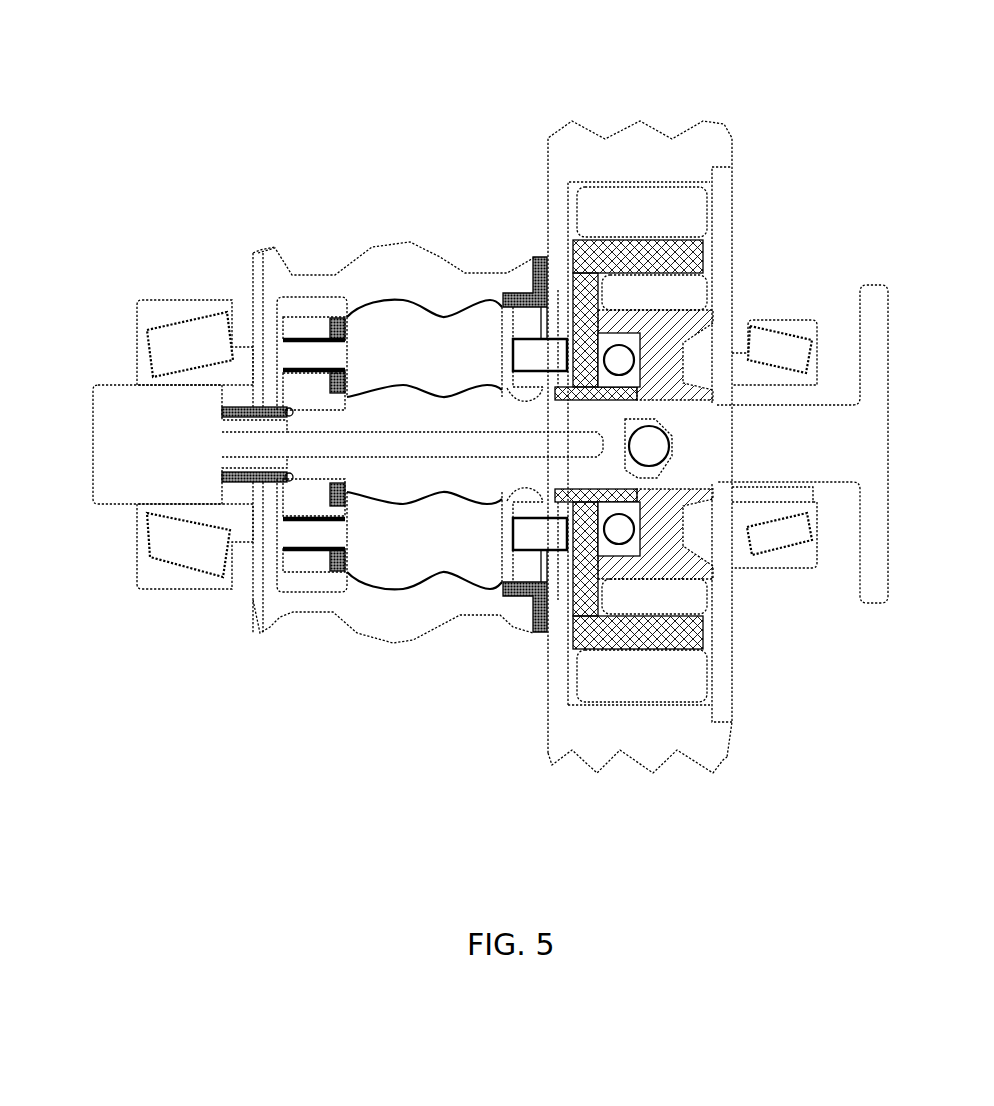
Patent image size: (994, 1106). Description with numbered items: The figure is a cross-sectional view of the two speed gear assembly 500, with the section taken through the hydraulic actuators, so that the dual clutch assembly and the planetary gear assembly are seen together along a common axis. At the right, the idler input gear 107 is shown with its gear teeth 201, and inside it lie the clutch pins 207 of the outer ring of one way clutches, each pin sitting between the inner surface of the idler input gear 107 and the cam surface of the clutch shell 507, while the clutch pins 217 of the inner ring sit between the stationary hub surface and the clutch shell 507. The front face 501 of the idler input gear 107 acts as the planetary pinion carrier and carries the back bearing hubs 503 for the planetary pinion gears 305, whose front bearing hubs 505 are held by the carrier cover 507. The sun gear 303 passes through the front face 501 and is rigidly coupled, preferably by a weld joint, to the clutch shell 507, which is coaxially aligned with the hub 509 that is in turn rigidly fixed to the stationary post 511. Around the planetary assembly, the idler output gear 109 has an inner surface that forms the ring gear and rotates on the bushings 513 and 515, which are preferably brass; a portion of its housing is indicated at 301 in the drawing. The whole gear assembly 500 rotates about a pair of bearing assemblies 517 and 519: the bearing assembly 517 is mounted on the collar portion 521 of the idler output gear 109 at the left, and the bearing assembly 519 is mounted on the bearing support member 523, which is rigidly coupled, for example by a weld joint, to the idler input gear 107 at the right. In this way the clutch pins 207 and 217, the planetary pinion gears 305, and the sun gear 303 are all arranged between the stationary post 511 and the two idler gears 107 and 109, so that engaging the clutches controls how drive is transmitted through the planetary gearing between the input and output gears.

The gear assembly 500 is at (287, 83).
The idler input gear 107 is at (626, 143).
The gear teeth 201 is at (683, 122).
The front face 501 is at (536, 203).
The back bearing hubs 503 is at (546, 258).
The front bearing hubs 505 is at (308, 340).
The clutch shell 507 is at (697, 256).
The hub 509 is at (678, 563).
The stationary post 511 is at (820, 459).
The bushing 513 is at (533, 627).
The bushing 515 is at (251, 240).
The bearing assembly 517 is at (187, 308).
The bearing assembly 519 is at (787, 328).
The collar portion 521 is at (122, 402).
The bearing support member 523 is at (722, 668).
The idler output gear 109 is at (432, 289).
The housing cover 301 is at (415, 240).
The sun gear 303 is at (380, 478).
The planetary pinion gears 305 is at (437, 366).
The clutch pin 207 is at (661, 225).
The clutch pin 217 is at (675, 303).